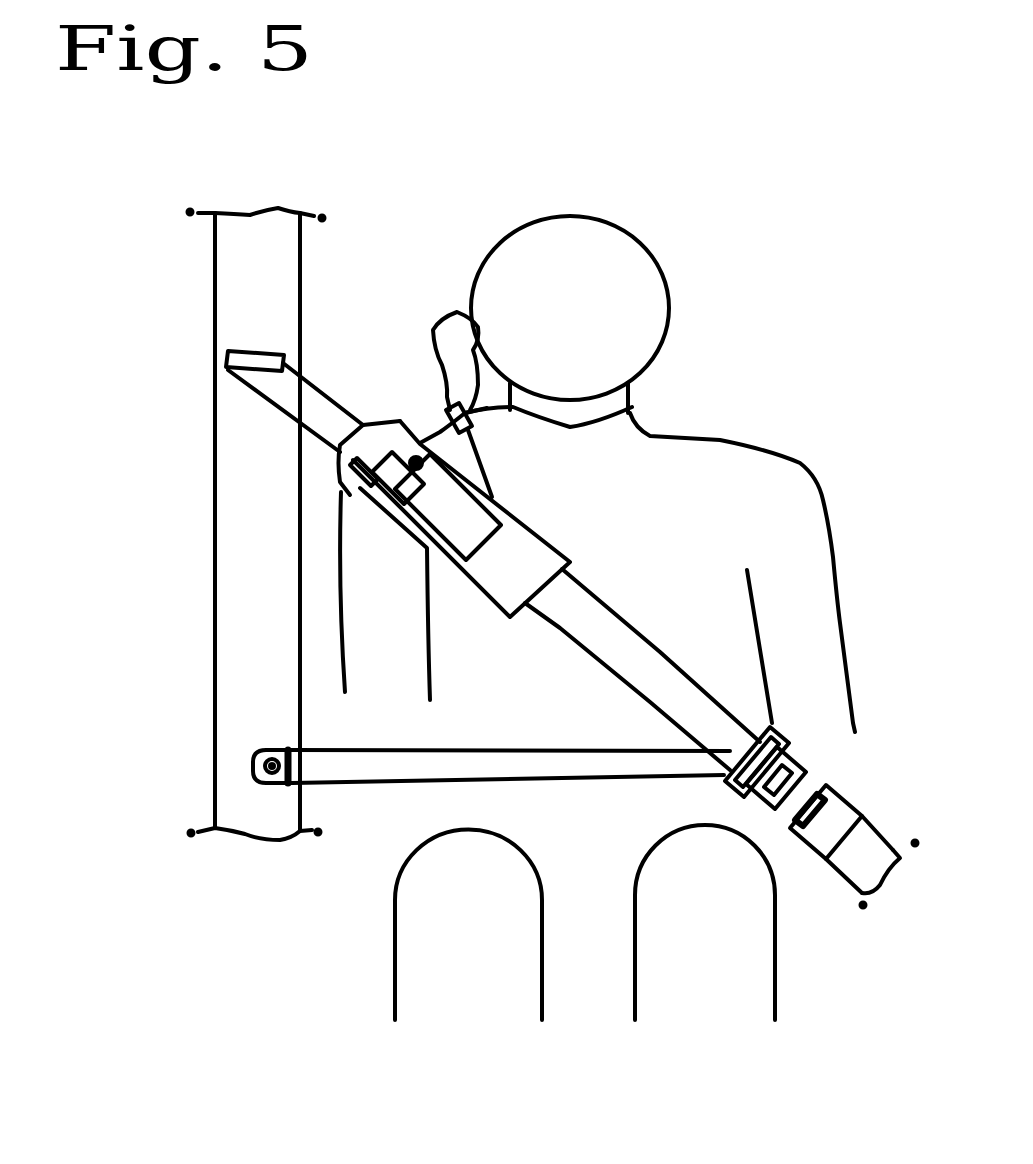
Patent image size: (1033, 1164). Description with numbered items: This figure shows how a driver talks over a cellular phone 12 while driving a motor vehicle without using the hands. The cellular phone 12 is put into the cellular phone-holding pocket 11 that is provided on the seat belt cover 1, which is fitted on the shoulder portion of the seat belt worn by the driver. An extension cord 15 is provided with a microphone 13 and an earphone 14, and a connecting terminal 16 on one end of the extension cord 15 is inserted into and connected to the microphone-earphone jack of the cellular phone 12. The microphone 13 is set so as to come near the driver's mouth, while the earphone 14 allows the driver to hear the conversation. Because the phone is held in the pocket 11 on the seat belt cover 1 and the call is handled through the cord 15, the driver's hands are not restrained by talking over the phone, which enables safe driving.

The seat belt cover 1 is at (485, 575).
The cellular phone-holding pocket 11 is at (430, 520).
The cellular phone 12 is at (345, 492).
The microphone 13 is at (633, 417).
The earphone 14 is at (463, 313).
The extension cord 15 is at (433, 330).
The connecting terminal 16 is at (417, 460).